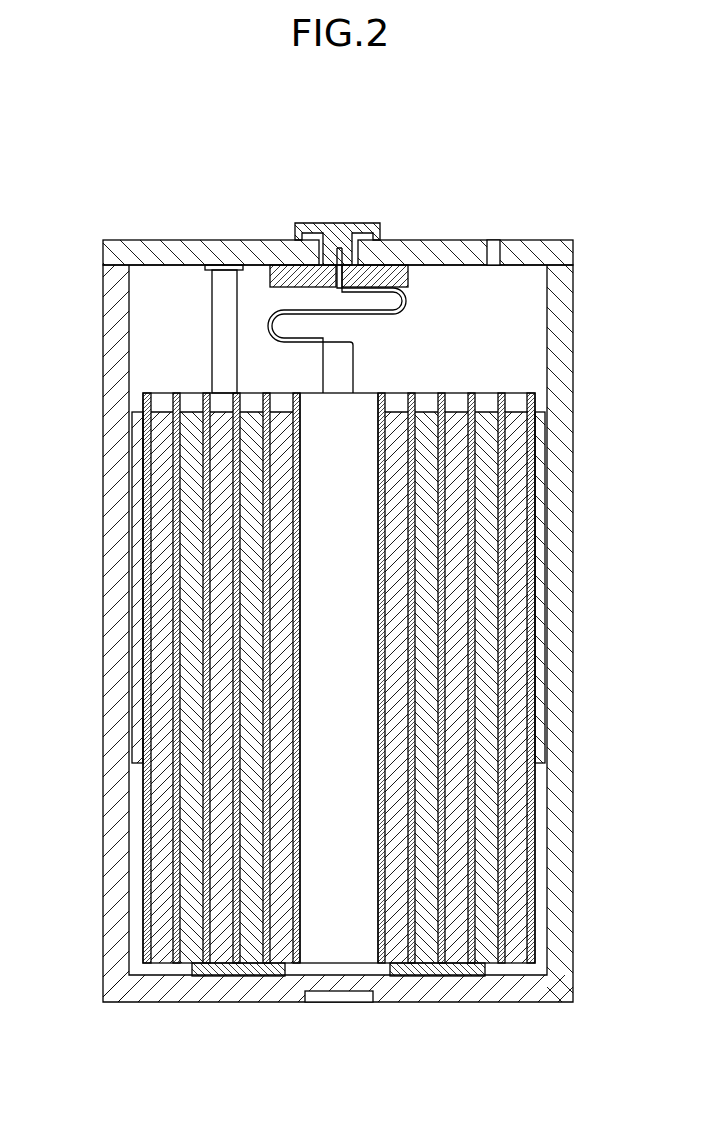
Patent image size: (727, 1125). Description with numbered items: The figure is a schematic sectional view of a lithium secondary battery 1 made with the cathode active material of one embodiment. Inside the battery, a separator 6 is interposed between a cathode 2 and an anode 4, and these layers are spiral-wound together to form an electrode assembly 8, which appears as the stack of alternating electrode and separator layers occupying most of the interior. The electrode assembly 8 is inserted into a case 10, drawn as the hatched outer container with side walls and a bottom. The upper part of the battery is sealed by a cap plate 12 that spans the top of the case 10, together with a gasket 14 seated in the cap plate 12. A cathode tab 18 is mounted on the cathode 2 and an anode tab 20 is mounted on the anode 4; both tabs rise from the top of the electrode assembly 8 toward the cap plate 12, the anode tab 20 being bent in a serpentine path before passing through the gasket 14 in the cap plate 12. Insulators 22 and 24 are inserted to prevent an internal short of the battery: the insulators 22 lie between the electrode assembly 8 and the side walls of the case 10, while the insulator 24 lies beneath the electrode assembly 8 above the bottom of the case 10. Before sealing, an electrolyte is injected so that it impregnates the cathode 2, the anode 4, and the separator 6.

The lithium secondary battery 1 is at (603, 331).
The cathode 2 is at (498, 920).
The anode 4 is at (190, 866).
The separator 6 is at (176, 927).
The electrode assembly 8 is at (470, 380).
The case 10 is at (118, 349).
The cap plate 12 is at (432, 250).
The gasket 14 is at (302, 225).
The cathode tab 18 is at (228, 278).
The anode tab 20 is at (338, 248).
The insulator 22 is at (137, 571).
The insulator 24 is at (238, 977).